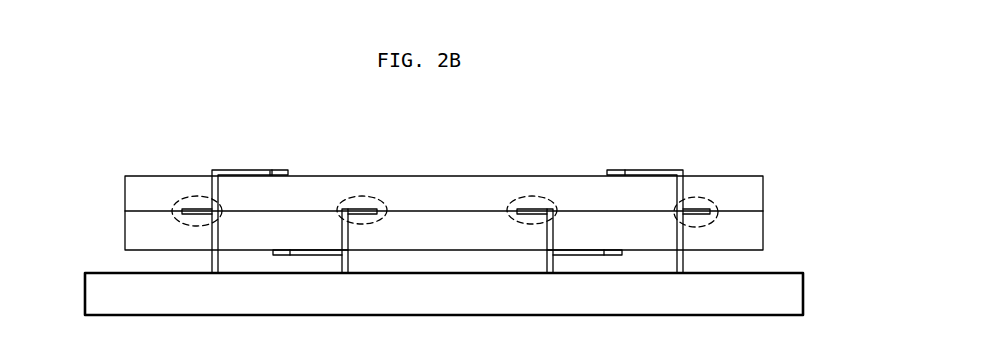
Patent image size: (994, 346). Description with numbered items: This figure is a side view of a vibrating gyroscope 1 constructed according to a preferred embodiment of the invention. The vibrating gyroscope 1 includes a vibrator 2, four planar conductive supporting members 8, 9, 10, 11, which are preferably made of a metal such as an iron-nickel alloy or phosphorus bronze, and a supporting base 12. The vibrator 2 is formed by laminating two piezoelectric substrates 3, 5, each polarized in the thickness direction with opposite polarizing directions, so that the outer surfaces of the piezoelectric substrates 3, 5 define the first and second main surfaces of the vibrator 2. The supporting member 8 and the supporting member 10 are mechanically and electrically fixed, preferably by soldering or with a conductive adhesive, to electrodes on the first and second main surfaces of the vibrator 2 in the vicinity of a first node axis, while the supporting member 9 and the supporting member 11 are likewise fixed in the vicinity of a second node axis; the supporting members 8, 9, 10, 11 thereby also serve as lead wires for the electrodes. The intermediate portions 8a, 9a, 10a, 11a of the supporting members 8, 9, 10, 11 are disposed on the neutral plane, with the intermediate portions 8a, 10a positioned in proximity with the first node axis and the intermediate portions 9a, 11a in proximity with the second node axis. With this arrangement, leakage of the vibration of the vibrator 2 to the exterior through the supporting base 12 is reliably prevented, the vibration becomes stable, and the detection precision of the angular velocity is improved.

The vibrating gyroscope 1 is at (100, 158).
The vibrator 2 is at (743, 174).
The piezoelectric substrate 3 is at (750, 196).
The piezoelectric substrate 5 is at (750, 227).
The supporting member 8 is at (249, 170).
The intermediate portion 8a is at (195, 197).
The supporting member 9 is at (646, 170).
The intermediate portion 9a is at (697, 197).
The supporting member 10 is at (297, 250).
The intermediate portion 10a is at (362, 196).
The supporting member 11 is at (597, 250).
The intermediate portion 11a is at (532, 196).
The supporting base 12 is at (100, 283).